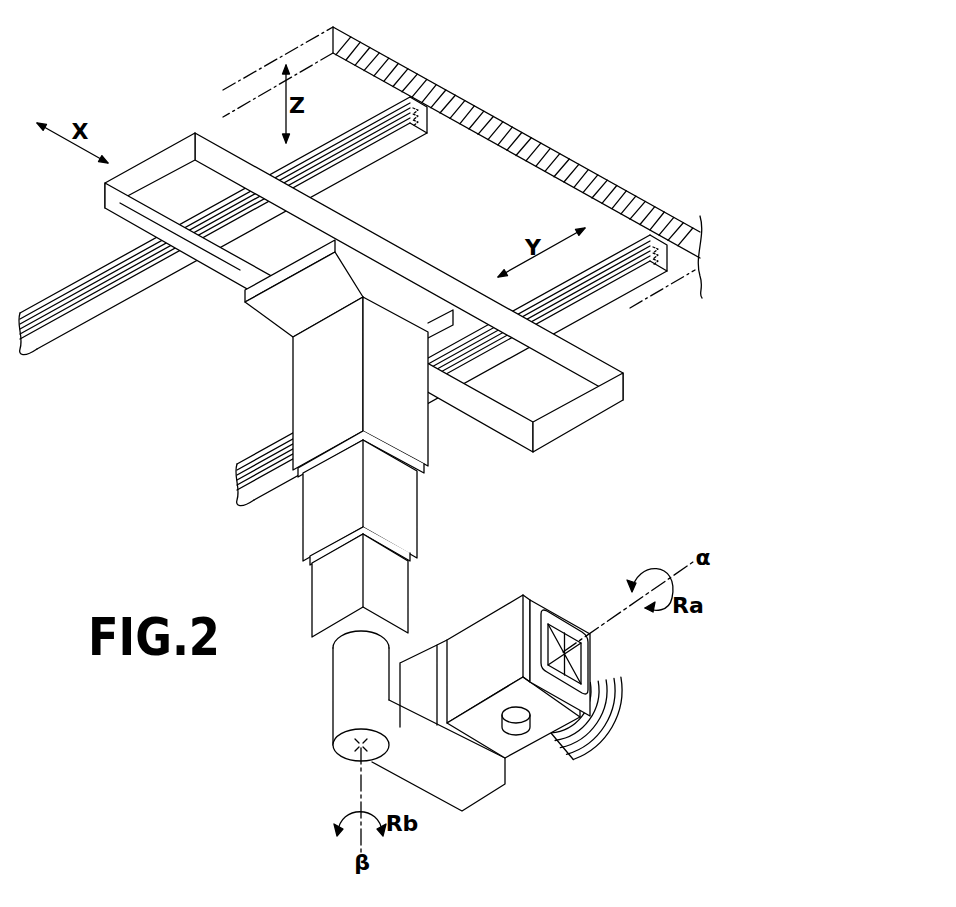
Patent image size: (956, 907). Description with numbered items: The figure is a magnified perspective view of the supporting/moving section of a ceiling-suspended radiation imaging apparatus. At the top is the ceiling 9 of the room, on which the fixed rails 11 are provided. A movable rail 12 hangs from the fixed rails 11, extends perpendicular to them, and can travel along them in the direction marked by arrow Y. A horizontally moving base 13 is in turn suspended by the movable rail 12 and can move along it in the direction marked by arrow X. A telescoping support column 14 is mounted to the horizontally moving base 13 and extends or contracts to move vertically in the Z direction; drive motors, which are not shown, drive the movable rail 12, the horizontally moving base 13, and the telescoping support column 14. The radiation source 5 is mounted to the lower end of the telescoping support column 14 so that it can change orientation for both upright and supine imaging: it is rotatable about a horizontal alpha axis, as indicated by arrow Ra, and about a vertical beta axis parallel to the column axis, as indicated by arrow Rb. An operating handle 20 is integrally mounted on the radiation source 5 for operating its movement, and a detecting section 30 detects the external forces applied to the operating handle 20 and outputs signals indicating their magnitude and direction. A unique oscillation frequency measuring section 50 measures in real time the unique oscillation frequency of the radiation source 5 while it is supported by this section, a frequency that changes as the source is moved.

The ceiling 9 is at (503, 167).
The fixed rails 11 is at (382, 150).
The movable rail 12 is at (413, 264).
The horizontally moving base 13 is at (268, 316).
The telescoping support column 14 is at (296, 391).
The radiation source 5 is at (490, 622).
The detecting section 30 is at (533, 598).
The operating handle 20 is at (545, 610).
The unique oscillation frequency measuring section 50 is at (517, 735).